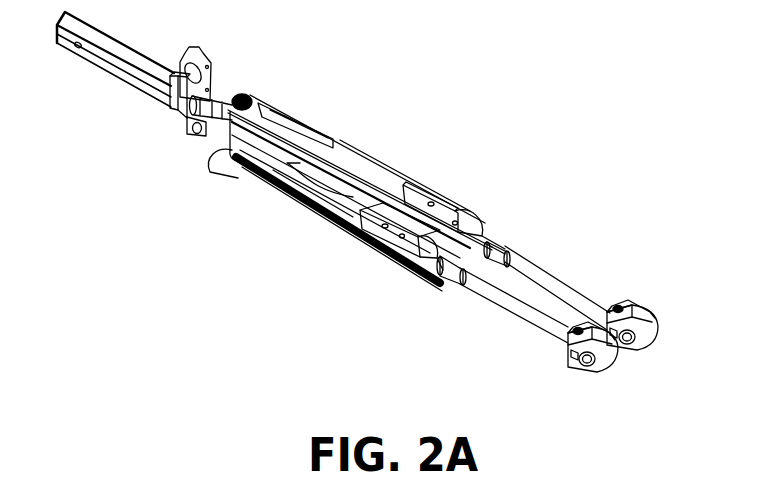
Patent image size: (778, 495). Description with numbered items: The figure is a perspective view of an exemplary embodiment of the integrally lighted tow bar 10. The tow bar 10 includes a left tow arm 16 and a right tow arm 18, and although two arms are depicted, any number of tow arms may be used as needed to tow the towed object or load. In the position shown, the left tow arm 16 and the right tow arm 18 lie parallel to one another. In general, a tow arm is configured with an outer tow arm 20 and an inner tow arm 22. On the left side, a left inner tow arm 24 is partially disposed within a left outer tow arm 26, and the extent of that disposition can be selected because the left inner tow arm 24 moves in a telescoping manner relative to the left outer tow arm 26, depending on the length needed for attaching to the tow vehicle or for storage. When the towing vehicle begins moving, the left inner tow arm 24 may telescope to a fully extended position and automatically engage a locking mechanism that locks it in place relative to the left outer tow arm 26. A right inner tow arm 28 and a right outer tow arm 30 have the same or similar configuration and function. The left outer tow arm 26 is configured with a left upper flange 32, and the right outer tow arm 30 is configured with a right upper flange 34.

The integrally lighted tow bar 10 is at (442, 70).
The left tow arm 16 is at (443, 191).
The right tow arm 18 is at (378, 254).
The outer tow arm 20 is at (540, 193).
The inner tow arm 22 is at (583, 246).
The left inner tow arm 24 is at (590, 302).
The left outer tow arm 26 is at (373, 170).
The right inner tow arm 28 is at (520, 312).
The right outer tow arm 30 is at (290, 187).
The left upper flange 32 is at (281, 110).
The right upper flange 34 is at (217, 153).